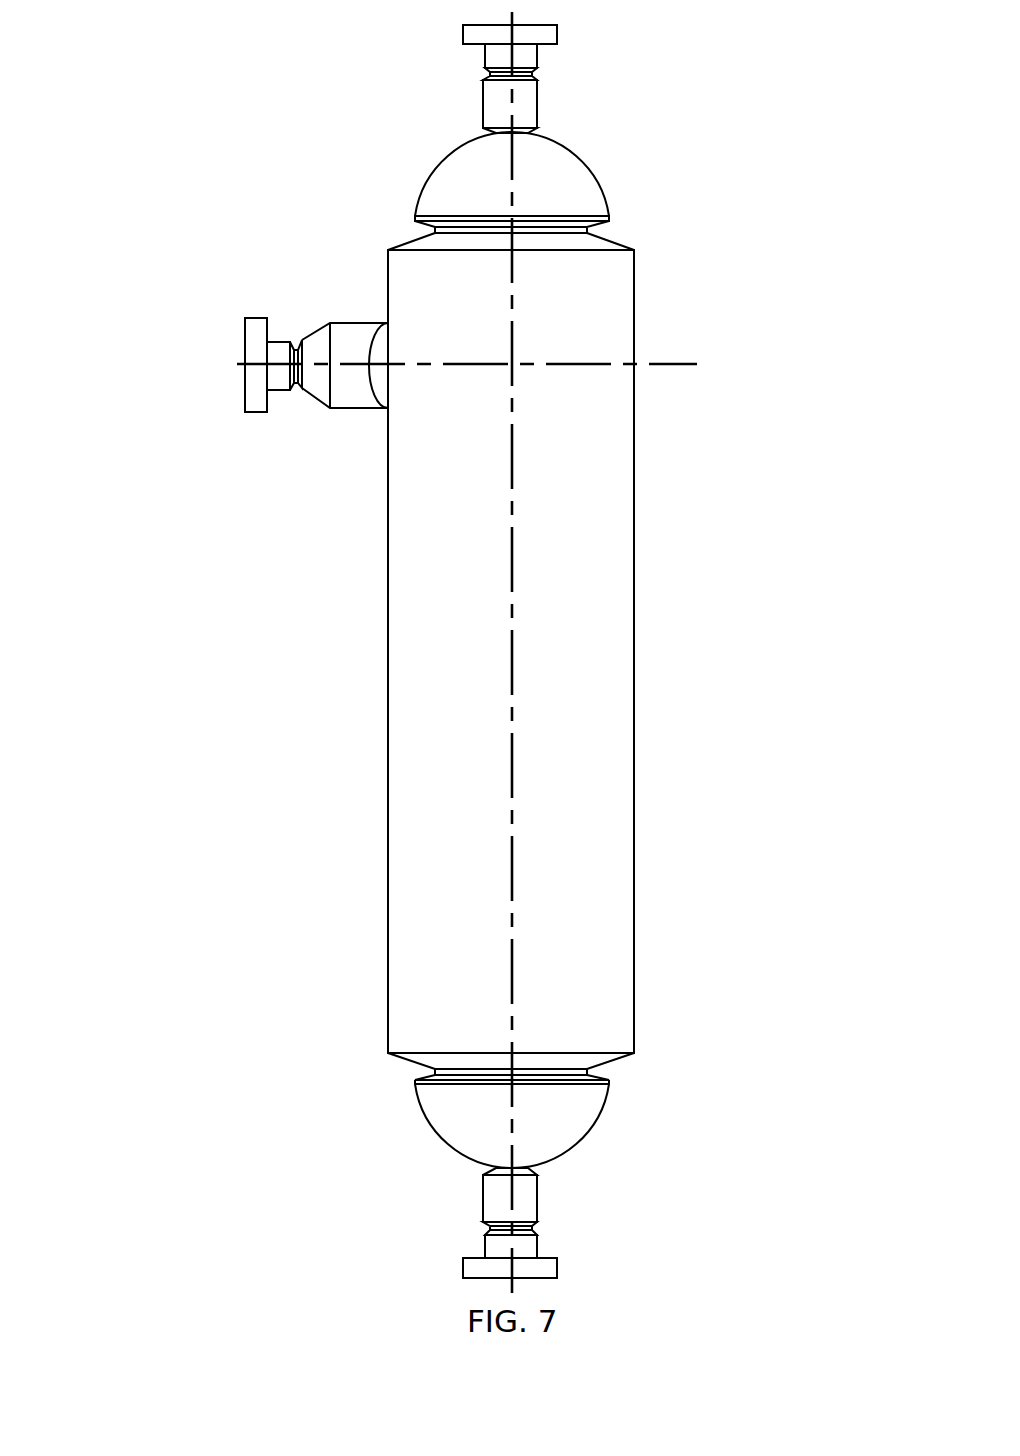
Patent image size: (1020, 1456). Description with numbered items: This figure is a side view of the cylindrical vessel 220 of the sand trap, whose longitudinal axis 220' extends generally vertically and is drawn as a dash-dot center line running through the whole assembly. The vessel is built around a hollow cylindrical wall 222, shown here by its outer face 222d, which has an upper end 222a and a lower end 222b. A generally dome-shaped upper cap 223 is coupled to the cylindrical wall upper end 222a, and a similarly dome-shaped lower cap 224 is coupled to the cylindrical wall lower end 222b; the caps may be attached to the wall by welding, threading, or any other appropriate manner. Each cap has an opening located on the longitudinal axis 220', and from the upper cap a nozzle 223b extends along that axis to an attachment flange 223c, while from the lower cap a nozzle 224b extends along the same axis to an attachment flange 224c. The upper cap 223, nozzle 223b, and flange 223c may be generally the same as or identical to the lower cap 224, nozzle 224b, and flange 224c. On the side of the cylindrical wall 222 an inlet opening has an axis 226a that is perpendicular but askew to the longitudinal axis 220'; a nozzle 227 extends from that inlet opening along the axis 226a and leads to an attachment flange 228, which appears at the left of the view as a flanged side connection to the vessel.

The cylindrical vessel 220 is at (413, 672).
The longitudinal axis 220' is at (379, 652).
The hollow cylindrical wall 222 is at (435, 772).
The cylindrical wall upper end 222a is at (405, 224).
The cylindrical wall lower end 222b is at (396, 1074).
The outer face 222d is at (448, 882).
The upper cap 223 is at (565, 183).
The nozzle 223b is at (518, 107).
The attachment flange 223c is at (553, 25).
The lower cap 224 is at (549, 1134).
The nozzle 224b is at (522, 1198).
The attachment flange 224c is at (543, 1278).
The inlet opening axis 226a is at (650, 364).
The nozzle 227 is at (352, 408).
The attachment flange 228 is at (247, 318).